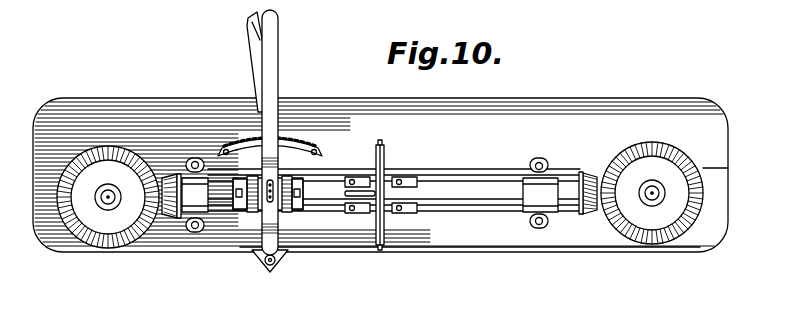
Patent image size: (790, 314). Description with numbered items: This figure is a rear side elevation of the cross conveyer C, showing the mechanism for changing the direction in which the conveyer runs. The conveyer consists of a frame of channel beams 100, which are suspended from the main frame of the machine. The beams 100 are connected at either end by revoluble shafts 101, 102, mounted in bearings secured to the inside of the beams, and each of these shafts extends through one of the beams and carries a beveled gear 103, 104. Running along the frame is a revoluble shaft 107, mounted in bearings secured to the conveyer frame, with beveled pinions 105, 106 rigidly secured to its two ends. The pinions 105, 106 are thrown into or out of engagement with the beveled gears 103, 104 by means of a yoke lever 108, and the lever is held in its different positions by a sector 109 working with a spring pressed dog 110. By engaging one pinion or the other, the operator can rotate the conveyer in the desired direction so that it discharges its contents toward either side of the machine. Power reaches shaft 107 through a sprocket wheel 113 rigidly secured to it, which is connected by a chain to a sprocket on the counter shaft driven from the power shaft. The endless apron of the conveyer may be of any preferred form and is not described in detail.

The channel beams 100 is at (380, 175).
The revoluble shaft 101 is at (107, 199).
The revoluble shaft 102 is at (652, 197).
The beveled gear 103 is at (128, 245).
The beveled gear 104 is at (634, 233).
The beveled pinion 105 is at (175, 215).
The beveled pinion 106 is at (586, 215).
The revoluble shaft 107 is at (462, 192).
The yoke lever 108 is at (272, 72).
The sector 109 is at (300, 143).
The spring pressed dog 110 is at (280, 104).
The sprocket wheel 113 is at (386, 154).
The cross conveyer C is at (344, 243).